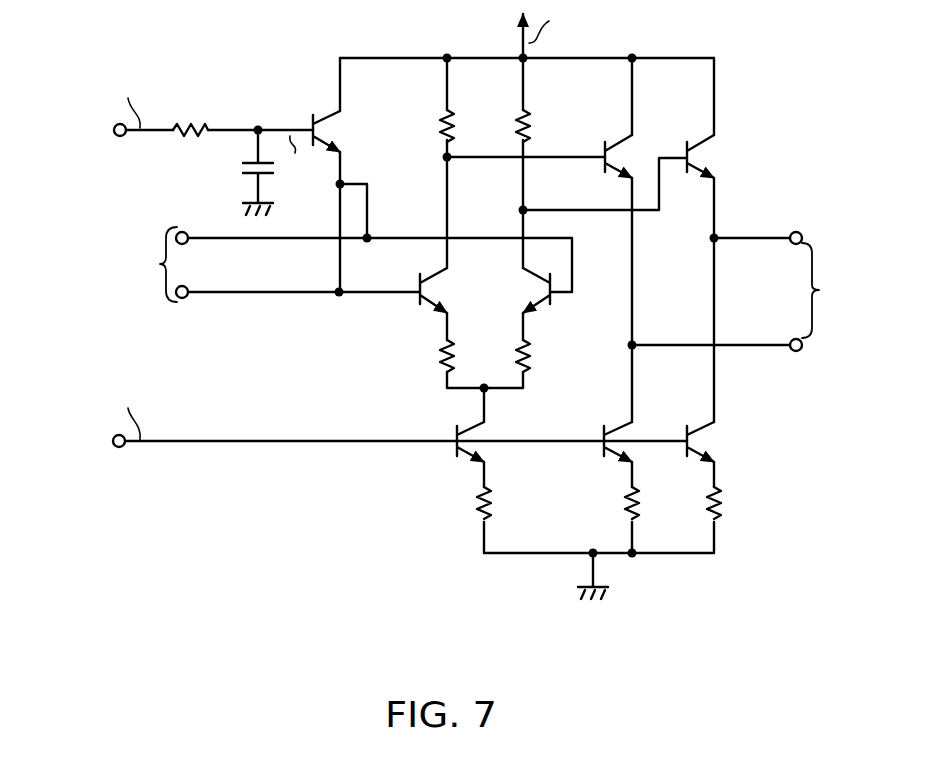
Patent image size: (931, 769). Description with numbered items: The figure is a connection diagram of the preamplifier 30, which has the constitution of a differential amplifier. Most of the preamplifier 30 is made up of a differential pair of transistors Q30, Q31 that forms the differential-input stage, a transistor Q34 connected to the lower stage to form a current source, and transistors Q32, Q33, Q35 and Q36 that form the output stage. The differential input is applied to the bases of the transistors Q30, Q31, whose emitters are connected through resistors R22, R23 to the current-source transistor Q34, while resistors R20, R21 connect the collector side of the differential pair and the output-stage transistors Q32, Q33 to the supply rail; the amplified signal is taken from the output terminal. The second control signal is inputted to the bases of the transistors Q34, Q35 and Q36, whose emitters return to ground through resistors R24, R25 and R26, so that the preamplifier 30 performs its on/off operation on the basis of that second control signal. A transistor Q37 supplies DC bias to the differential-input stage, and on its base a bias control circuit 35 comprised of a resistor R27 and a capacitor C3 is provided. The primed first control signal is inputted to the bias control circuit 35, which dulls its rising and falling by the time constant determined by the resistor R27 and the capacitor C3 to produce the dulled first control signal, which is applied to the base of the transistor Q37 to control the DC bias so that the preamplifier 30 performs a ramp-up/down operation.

The preamplifier 30 is at (803, 27).
The bias control circuit 35 is at (254, 93).
The transistor Q37 is at (313, 118).
The resistor R27 is at (200, 124).
The capacitor C3 is at (245, 170).
The resistor R20 is at (440, 125).
The resistor R21 is at (518, 125).
The transistor Q32 is at (601, 145).
The transistor Q33 is at (683, 145).
The transistor Q30 is at (418, 303).
The transistor Q31 is at (556, 301).
The resistor R22 is at (456, 352).
The resistor R23 is at (531, 360).
The transistor Q34 is at (453, 432).
The transistor Q35 is at (600, 432).
The transistor Q36 is at (683, 432).
The resistor R24 is at (490, 512).
The resistor R25 is at (624, 515).
The resistor R26 is at (722, 498).